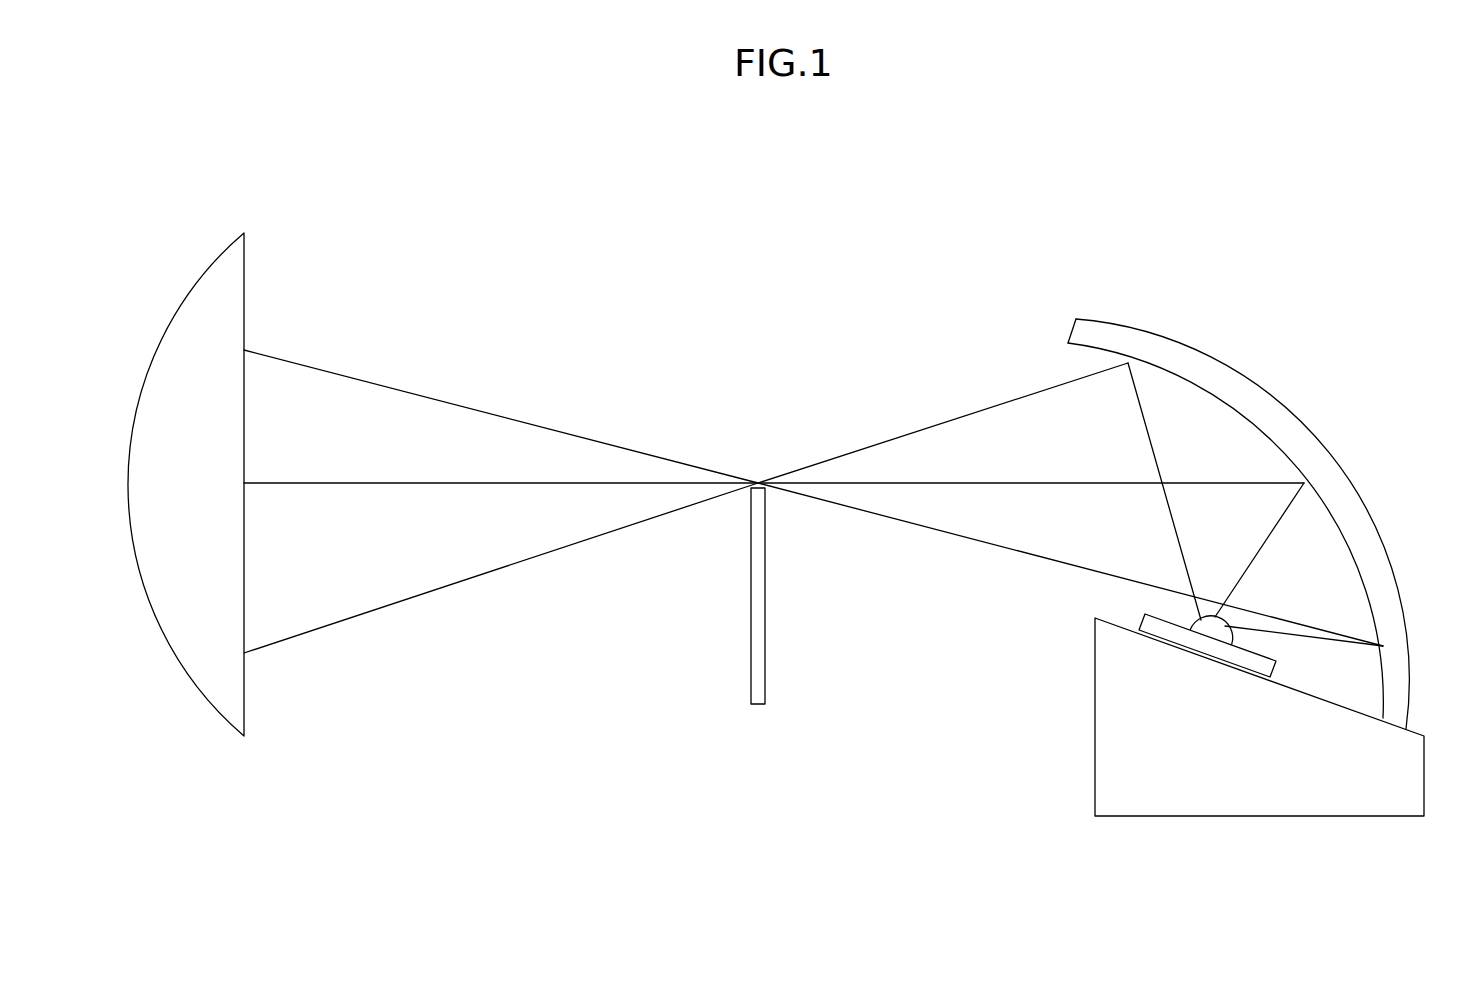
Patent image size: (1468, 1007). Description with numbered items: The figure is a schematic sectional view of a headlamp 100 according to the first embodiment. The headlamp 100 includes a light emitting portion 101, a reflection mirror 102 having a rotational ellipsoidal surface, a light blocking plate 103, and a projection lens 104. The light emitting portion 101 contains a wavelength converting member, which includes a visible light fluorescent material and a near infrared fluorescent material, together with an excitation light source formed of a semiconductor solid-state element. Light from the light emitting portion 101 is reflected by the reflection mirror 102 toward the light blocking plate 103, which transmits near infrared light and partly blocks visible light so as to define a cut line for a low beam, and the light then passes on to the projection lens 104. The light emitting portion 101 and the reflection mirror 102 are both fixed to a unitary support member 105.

The headlamp 100 is at (1101, 207).
The light emitting portion 101 is at (1147, 625).
The reflection mirror 102 is at (1232, 400).
The light blocking plate 103 is at (752, 703).
The projection lens 104 is at (222, 700).
The unitary support member 105 is at (1245, 773).